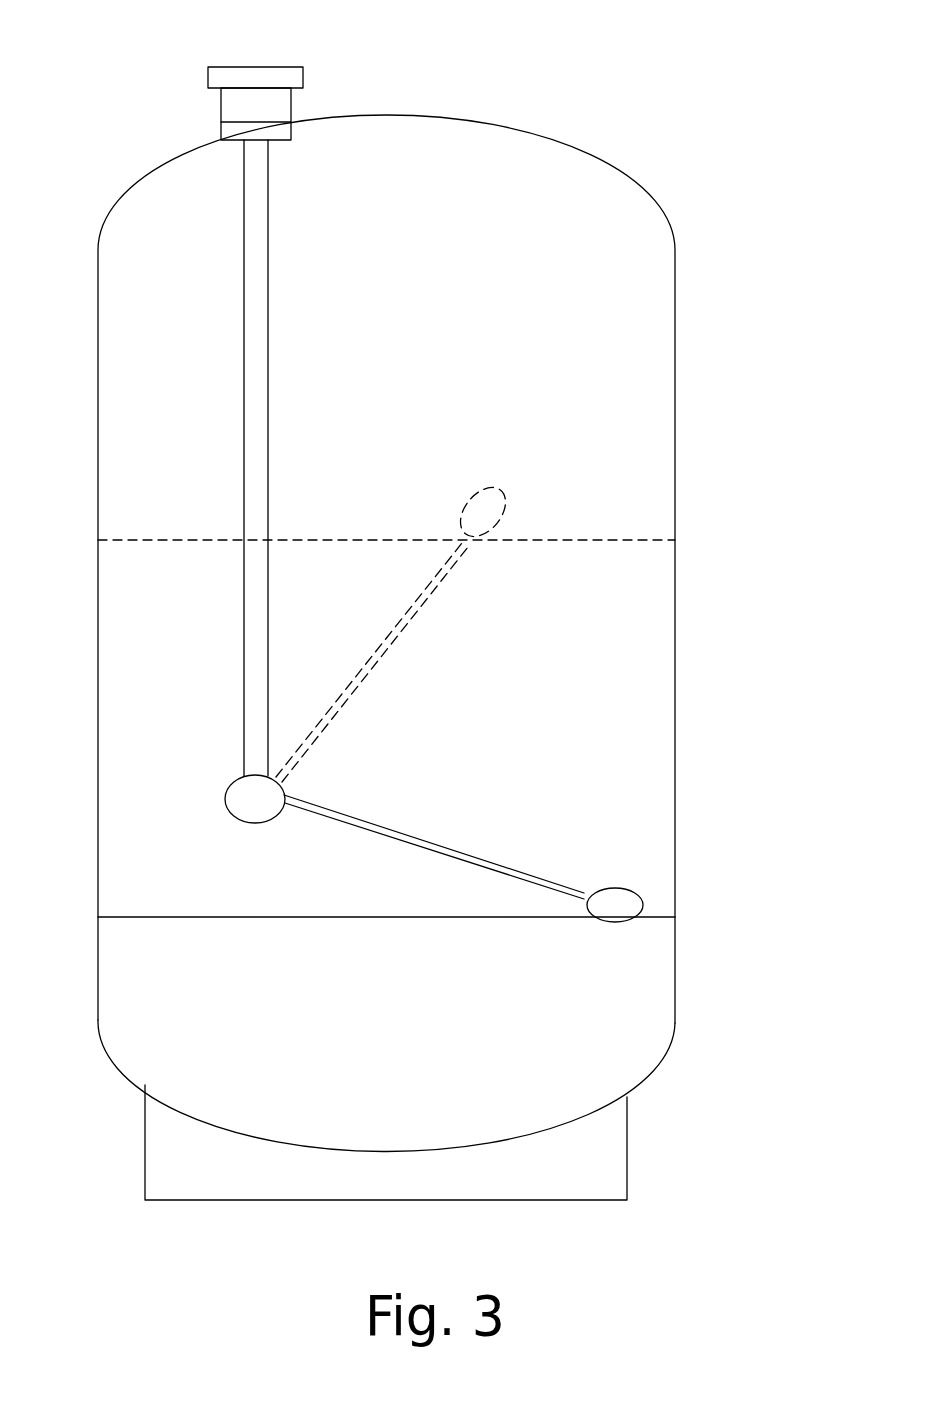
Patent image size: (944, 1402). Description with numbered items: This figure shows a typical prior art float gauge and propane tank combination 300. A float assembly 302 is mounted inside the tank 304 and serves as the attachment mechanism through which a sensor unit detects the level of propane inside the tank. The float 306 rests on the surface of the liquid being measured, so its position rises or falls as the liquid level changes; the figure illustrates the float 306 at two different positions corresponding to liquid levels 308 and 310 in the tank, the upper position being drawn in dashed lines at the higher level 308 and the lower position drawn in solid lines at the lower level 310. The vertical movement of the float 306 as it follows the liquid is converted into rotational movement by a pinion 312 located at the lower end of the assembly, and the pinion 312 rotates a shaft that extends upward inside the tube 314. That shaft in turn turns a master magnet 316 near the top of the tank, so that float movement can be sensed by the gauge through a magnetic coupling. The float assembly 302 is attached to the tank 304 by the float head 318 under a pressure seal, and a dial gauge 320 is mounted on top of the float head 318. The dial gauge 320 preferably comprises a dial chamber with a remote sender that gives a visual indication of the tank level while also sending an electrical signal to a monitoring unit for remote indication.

The float gauge and propane tank combination 300 is at (695, 56).
The float assembly 302 is at (225, 326).
The tank 304 is at (675, 385).
The float 306 is at (633, 893).
The liquid level 308 is at (543, 541).
The liquid level 310 is at (540, 918).
The pinion 312 is at (257, 800).
The tube 314 is at (262, 370).
The master magnet 316 is at (267, 128).
The float head 318 is at (257, 105).
The dial gauge 320 is at (257, 73).